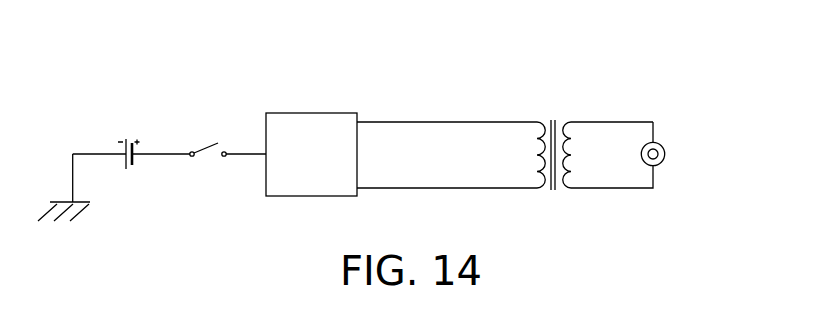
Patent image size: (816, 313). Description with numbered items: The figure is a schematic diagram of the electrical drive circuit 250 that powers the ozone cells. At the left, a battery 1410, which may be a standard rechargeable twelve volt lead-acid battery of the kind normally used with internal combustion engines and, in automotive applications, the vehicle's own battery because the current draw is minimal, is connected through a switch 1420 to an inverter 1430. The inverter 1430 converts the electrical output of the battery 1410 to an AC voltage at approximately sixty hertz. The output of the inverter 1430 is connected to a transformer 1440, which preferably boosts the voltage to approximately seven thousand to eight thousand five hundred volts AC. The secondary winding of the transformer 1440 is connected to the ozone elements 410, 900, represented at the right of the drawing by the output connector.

The electrical drive circuit 250 is at (280, 69).
The battery 1410 is at (128, 186).
The switch 1420 is at (211, 181).
The inverter 1430 is at (317, 113).
The transformer 1440 is at (565, 122).
The ozone element 410 is at (709, 129).
The ozone element 900 is at (665, 153).